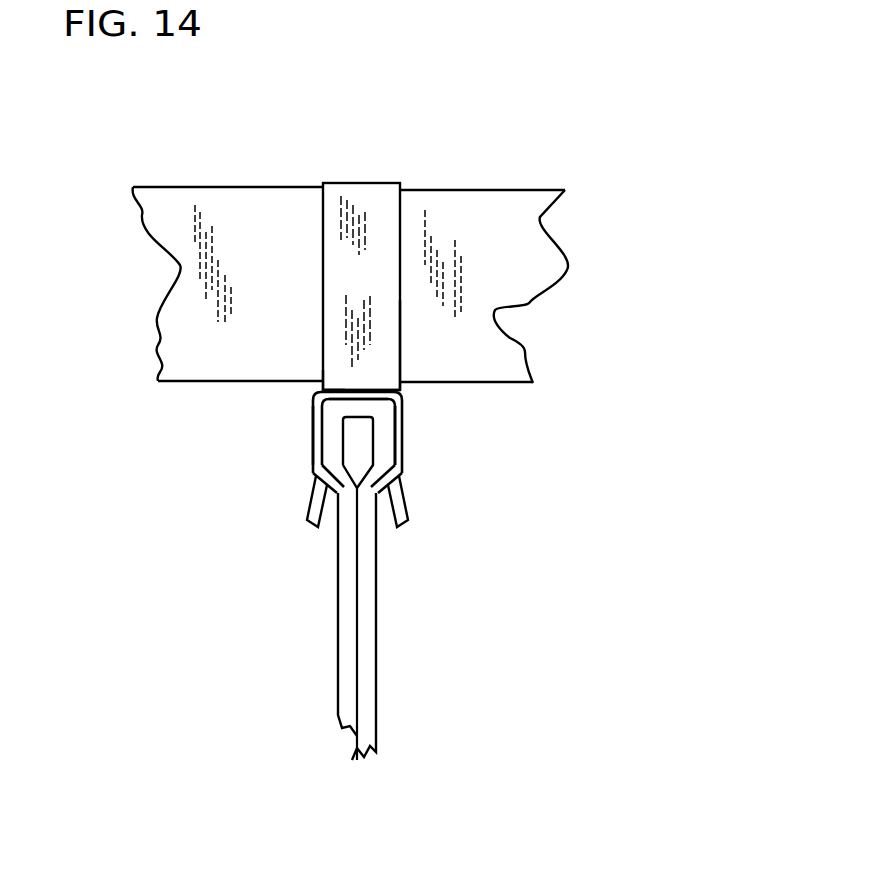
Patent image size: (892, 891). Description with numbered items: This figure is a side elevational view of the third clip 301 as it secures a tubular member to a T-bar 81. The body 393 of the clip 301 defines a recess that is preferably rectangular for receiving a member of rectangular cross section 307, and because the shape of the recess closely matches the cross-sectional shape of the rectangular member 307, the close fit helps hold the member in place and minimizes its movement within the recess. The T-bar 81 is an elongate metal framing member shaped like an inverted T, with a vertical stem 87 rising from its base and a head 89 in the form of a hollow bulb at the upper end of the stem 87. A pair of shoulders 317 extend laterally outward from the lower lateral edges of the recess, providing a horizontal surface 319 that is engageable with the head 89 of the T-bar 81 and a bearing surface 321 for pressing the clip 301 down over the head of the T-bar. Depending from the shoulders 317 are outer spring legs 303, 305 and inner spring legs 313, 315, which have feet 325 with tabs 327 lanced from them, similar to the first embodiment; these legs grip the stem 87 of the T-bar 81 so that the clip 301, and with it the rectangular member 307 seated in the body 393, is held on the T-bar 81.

The rectangular member 307 is at (540, 215).
The clip 301 is at (377, 180).
The body 393 is at (400, 357).
The bearing surface 321 is at (348, 385).
The shoulders 317 is at (320, 386).
The head 89 is at (380, 440).
The horizontal surface 319 is at (343, 405).
The inner spring leg 313 is at (470, 432).
The inner spring leg 315 is at (405, 412).
The outer spring leg 303 is at (251, 442).
The outer spring leg 305 is at (318, 461).
The tabs 327 is at (405, 481).
The feet 325 is at (313, 508).
The T-bar 81 is at (380, 610).
The stem 87 is at (348, 624).